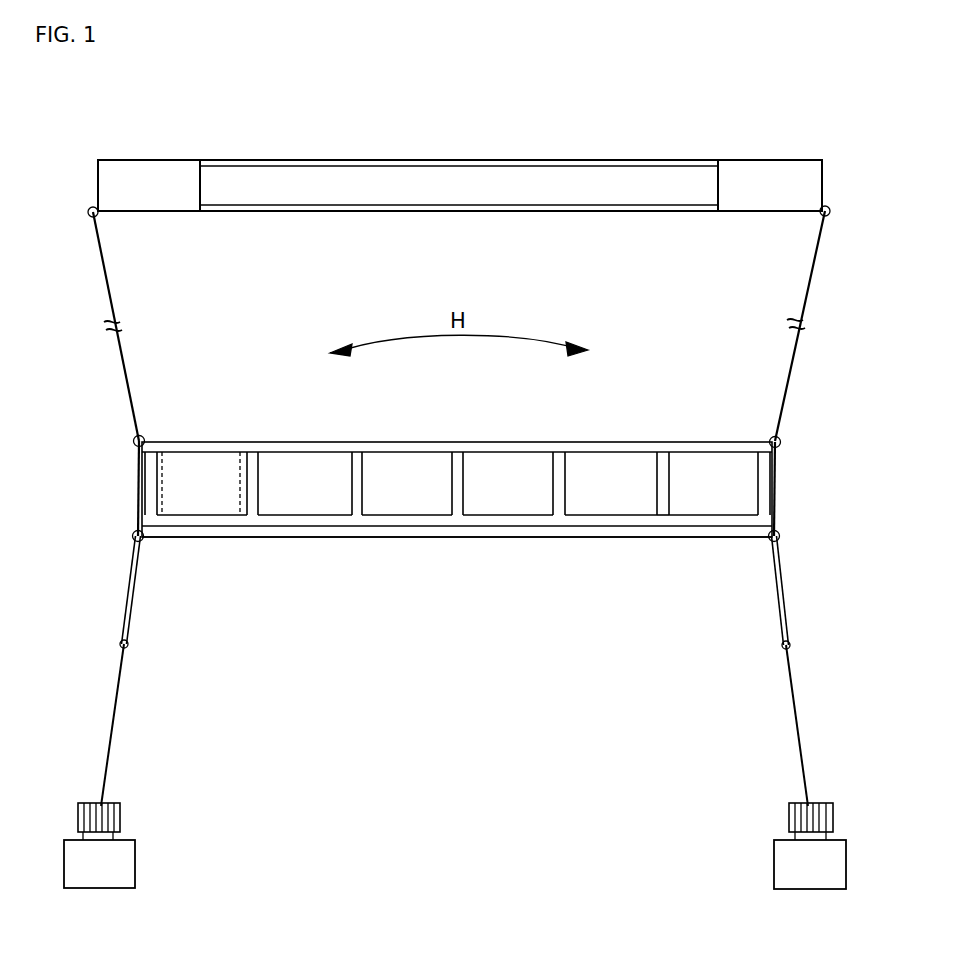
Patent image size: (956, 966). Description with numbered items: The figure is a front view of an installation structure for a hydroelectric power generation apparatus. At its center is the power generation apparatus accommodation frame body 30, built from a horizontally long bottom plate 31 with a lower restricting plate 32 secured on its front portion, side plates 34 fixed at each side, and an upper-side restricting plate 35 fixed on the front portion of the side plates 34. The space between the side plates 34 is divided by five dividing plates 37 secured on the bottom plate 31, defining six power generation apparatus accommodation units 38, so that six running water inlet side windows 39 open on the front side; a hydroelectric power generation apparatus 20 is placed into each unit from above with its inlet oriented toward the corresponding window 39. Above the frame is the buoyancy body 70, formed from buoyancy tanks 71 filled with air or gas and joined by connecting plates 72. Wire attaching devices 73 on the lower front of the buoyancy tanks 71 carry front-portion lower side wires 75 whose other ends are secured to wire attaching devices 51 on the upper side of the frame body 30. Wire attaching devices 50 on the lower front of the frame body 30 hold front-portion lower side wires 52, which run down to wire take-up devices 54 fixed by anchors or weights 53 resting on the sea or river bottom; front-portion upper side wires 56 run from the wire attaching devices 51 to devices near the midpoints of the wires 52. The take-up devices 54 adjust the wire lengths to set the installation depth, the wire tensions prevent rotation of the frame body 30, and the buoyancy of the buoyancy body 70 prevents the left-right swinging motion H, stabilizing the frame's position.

The hydroelectric power generation apparatus 20 is at (204, 466).
The power generation apparatus accommodation frame body 30 is at (594, 437).
The bottom plate 31 is at (508, 532).
The lower restricting plate 32 is at (407, 520).
The side plate 34 is at (148, 484).
The upper-side restricting plate 35 is at (399, 445).
The dividing plate 37 is at (253, 482).
The power generation apparatus accommodation unit 38 is at (288, 507).
The running water inlet side window 39 is at (199, 507).
The wire attaching device 50 is at (132, 536).
The wire attaching device 51 is at (133, 441).
The front-portion lower side wire 52 is at (116, 708).
The anchor or weight 53 is at (126, 867).
The wire take-up device 54 is at (122, 817).
The front-portion upper side wire 56 is at (127, 590).
The buoyancy body 70 is at (546, 160).
The buoyancy tank 71 is at (158, 176).
The connecting plate 72 is at (396, 165).
The wire attaching device 73 is at (98, 216).
The front-portion lower side wire 75 is at (125, 355).